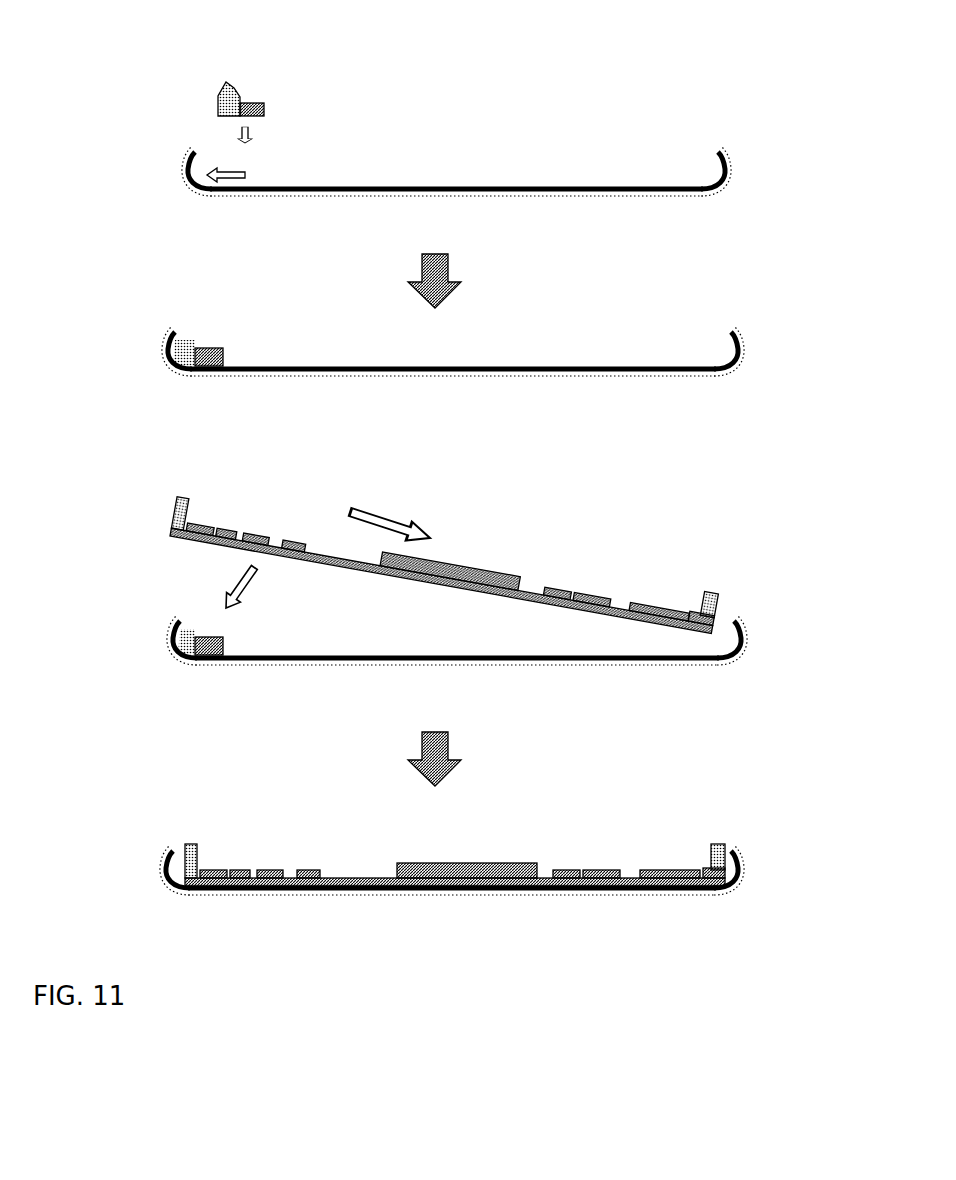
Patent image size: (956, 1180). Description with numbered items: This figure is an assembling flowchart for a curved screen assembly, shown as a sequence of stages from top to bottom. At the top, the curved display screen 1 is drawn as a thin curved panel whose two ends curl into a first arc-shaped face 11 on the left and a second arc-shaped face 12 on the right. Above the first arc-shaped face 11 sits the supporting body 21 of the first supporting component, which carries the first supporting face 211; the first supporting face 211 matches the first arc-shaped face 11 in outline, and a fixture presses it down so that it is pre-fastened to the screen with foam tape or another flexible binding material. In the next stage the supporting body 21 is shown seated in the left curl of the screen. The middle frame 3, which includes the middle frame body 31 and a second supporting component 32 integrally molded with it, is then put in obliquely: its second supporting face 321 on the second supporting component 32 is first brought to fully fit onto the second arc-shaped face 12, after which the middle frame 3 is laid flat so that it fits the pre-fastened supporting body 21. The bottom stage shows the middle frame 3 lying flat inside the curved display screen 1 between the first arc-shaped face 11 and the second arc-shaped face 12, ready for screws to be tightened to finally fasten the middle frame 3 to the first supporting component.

The curved display screen 1 is at (329, 193).
The first arc-shaped face 11 is at (186, 176).
The second arc-shaped face 12 is at (729, 170).
The supporting body 21 is at (224, 67).
The first supporting face 211 is at (218, 95).
The middle frame 3 is at (472, 425).
The middle frame body 31 is at (461, 567).
The second supporting component 32 is at (697, 608).
The second supporting face 321 is at (714, 627).